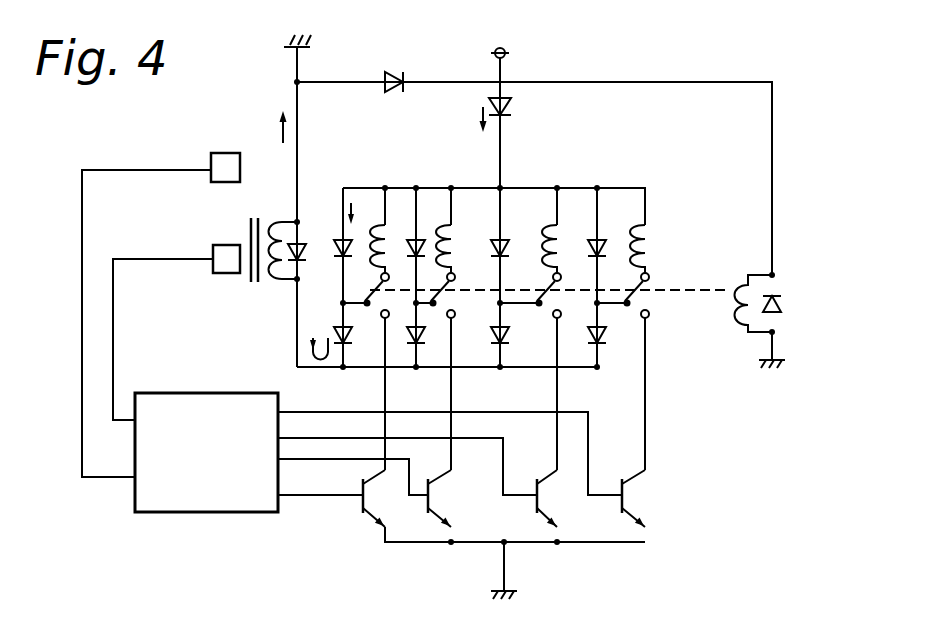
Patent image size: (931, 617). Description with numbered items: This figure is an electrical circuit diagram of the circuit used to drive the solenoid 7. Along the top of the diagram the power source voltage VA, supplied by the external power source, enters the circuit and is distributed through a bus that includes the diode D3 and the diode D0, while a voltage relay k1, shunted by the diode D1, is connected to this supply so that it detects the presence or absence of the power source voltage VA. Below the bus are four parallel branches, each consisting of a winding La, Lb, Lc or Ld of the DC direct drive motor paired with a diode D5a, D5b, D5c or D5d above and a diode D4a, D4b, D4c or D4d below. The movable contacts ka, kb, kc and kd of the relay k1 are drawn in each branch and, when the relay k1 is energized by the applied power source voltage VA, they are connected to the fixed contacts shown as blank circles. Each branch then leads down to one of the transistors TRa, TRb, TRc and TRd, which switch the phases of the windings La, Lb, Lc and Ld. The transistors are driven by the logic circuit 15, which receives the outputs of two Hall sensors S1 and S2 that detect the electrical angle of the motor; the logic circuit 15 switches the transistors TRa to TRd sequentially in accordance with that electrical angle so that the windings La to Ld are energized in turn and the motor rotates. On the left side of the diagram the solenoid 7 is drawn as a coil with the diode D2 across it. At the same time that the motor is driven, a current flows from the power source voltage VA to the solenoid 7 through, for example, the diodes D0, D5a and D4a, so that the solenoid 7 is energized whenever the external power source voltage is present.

The Hall sensor S1 is at (225, 275).
The Hall sensor S2 is at (224, 150).
The solenoid 7 is at (268, 216).
The diode D2 is at (293, 262).
The diode D3 is at (398, 77).
The power source voltage VA is at (505, 50).
The diode D0 is at (511, 107).
The diode D5a is at (338, 236).
The diode D5b is at (418, 236).
The diode D5c is at (505, 237).
The diode D5d is at (602, 237).
The winding La is at (385, 250).
The winding Lb is at (451, 250).
The winding Lc is at (557, 250).
The winding Ld is at (650, 248).
The movable contact ka is at (372, 310).
The movable contact kb is at (440, 313).
The movable contact kc is at (546, 312).
The movable contact kd is at (634, 300).
The voltage relay k1 is at (754, 288).
The diode D1 is at (781, 305).
The diode D4a is at (340, 350).
The diode D4b is at (425, 340).
The diode D4c is at (510, 340).
The diode D4d is at (603, 342).
The logic circuit 15 is at (205, 514).
The transistor TRa is at (356, 510).
The transistor TRb is at (425, 514).
The transistor TRc is at (537, 514).
The transistor TRd is at (622, 514).